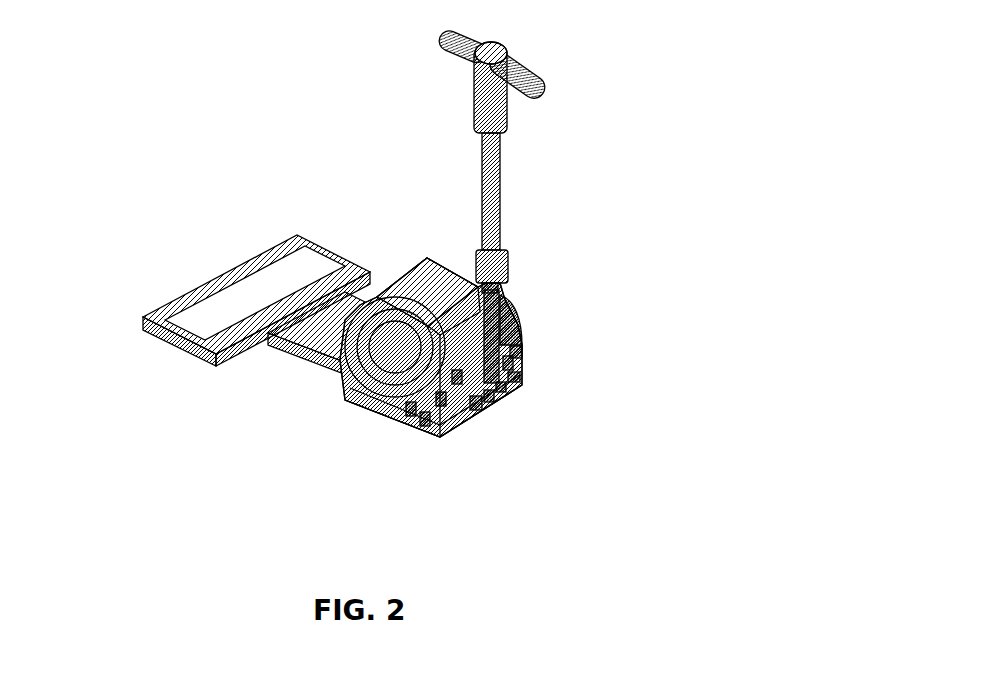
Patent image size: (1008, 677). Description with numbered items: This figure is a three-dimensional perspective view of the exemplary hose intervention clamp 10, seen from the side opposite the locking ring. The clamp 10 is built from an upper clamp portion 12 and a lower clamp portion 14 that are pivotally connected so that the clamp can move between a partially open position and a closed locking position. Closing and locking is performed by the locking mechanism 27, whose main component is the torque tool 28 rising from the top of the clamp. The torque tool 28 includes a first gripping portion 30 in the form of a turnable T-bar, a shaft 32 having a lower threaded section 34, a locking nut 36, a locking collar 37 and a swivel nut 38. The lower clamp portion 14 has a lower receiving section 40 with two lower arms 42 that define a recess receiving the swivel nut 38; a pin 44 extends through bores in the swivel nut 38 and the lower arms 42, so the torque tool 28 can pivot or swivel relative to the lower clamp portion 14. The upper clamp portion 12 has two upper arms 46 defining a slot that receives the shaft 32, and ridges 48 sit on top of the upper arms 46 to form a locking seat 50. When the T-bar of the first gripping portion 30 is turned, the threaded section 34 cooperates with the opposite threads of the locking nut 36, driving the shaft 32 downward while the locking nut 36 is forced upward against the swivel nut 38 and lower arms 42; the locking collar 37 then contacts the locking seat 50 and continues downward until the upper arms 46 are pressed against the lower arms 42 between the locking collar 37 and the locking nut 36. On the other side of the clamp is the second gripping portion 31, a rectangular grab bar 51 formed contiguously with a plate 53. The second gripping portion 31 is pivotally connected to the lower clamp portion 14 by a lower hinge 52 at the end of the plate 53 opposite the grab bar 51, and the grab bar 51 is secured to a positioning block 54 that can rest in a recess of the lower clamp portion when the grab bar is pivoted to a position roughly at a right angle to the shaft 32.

The hose intervention clamp 10 is at (278, 147).
The upper clamp portion 12 is at (420, 262).
The lower clamp portion 14 is at (490, 407).
The locking mechanism 27 is at (538, 188).
The torque tool 28 is at (507, 120).
The first gripping portion 30 is at (505, 50).
The second gripping portion 31 is at (173, 300).
The shaft 32 is at (492, 222).
The lower threaded section 34 is at (505, 335).
The locking nut 36 is at (498, 397).
The locking collar 37 is at (507, 265).
The swivel nut 38 is at (505, 390).
The lower receiving section 40 is at (522, 378).
The lower arms 42 is at (443, 397).
The pin 44 is at (483, 400).
The upper arms 46 is at (457, 373).
The ridges 48 is at (518, 352).
The locking seat 50 is at (520, 352).
The grab bar 51 is at (173, 344).
The lower hinge 52 is at (427, 430).
The plate 53 is at (324, 342).
The positioning block 54 is at (412, 403).